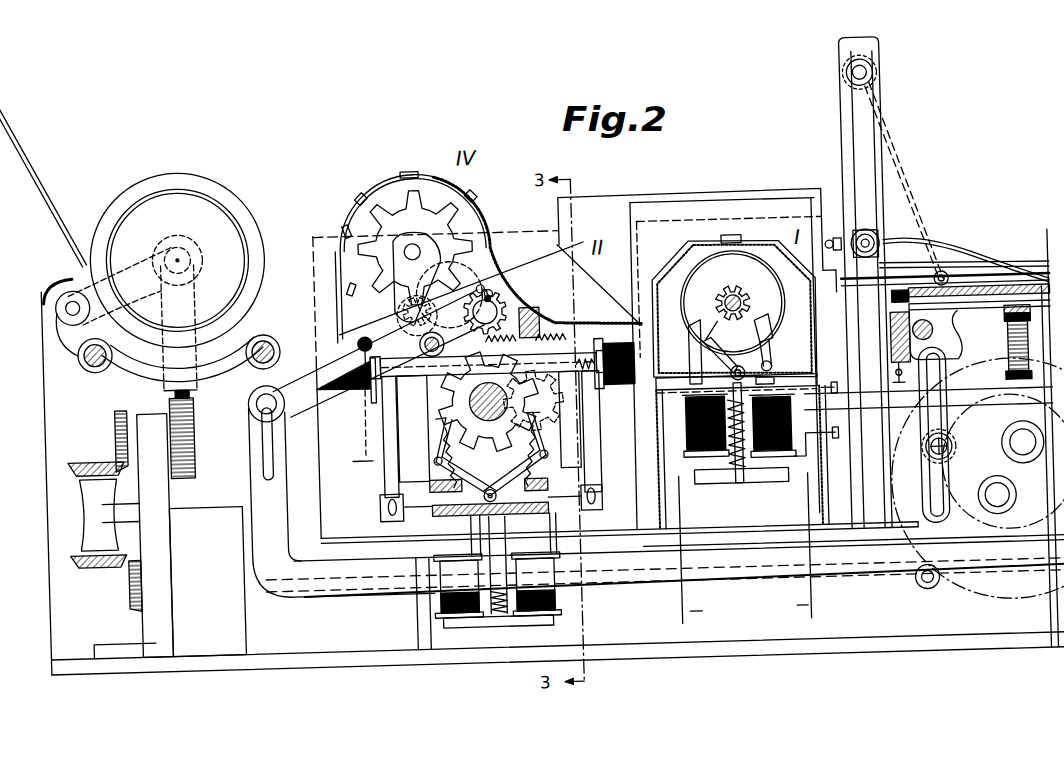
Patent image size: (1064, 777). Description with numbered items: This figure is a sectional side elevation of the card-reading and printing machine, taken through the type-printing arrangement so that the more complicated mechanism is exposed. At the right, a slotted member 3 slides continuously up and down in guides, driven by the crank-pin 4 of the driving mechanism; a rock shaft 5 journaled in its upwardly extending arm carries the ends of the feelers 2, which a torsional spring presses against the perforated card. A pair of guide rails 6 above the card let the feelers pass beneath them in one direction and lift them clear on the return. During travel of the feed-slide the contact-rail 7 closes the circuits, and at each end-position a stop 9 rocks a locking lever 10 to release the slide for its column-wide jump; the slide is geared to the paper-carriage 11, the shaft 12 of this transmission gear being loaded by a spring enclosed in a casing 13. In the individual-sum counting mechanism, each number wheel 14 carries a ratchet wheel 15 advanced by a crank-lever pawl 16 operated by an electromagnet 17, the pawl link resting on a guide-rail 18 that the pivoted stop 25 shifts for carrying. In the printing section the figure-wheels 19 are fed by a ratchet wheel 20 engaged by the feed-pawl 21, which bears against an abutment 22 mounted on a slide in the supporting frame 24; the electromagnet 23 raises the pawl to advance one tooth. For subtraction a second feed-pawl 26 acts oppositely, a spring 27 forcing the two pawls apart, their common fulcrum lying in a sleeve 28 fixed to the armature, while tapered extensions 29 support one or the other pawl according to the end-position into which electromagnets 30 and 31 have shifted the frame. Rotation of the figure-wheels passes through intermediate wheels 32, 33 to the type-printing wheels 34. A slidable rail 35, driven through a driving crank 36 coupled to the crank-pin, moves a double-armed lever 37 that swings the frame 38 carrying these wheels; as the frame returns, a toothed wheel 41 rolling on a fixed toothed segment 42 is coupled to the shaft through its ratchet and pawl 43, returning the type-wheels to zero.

The feelers 2 is at (912, 200).
The slotted member 3 is at (890, 70).
The crank-pin 4 is at (922, 600).
The rock shaft 5 is at (885, 250).
The guide rails 6 is at (1030, 276).
The contact-rail 7 is at (948, 372).
The stop 9 is at (925, 248).
The locking lever 10 is at (890, 310).
The paper-carriage 11 is at (205, 182).
The shaft 12 is at (268, 578).
The casing 13 is at (205, 503).
The number wheel 14 is at (700, 280).
The ratchet wheel 15 is at (754, 308).
The pawl 16 is at (709, 342).
The electromagnet 17 is at (714, 463).
The guide-rail 18 is at (691, 353).
The figure-wheels 19 is at (455, 412).
The ratchet wheel 20 is at (525, 398).
The feed-pawl 21 is at (440, 470).
The abutment 22 is at (395, 452).
The electromagnet 23 is at (556, 601).
The supporting frame 24 is at (444, 372).
The stop 25 is at (548, 332).
The feed-pawl 26 is at (560, 446).
The spring 27 is at (490, 485).
The sleeve 28 is at (440, 513).
The extensions 29 is at (378, 497).
The electromagnet 30 is at (620, 388).
The electromagnet 31 is at (350, 384).
The intermediate wheel 32 is at (535, 315).
The intermediate wheel 33 is at (416, 200).
The type-printing wheels 34 is at (385, 193).
The rail 35 is at (660, 578).
The driving crank 36 is at (926, 460).
The double-armed lever 37 is at (292, 375).
The frame 38 is at (425, 250).
The toothed wheel 41 is at (505, 300).
The toothed segment 42 is at (400, 312).
The pawl 43 is at (490, 286).